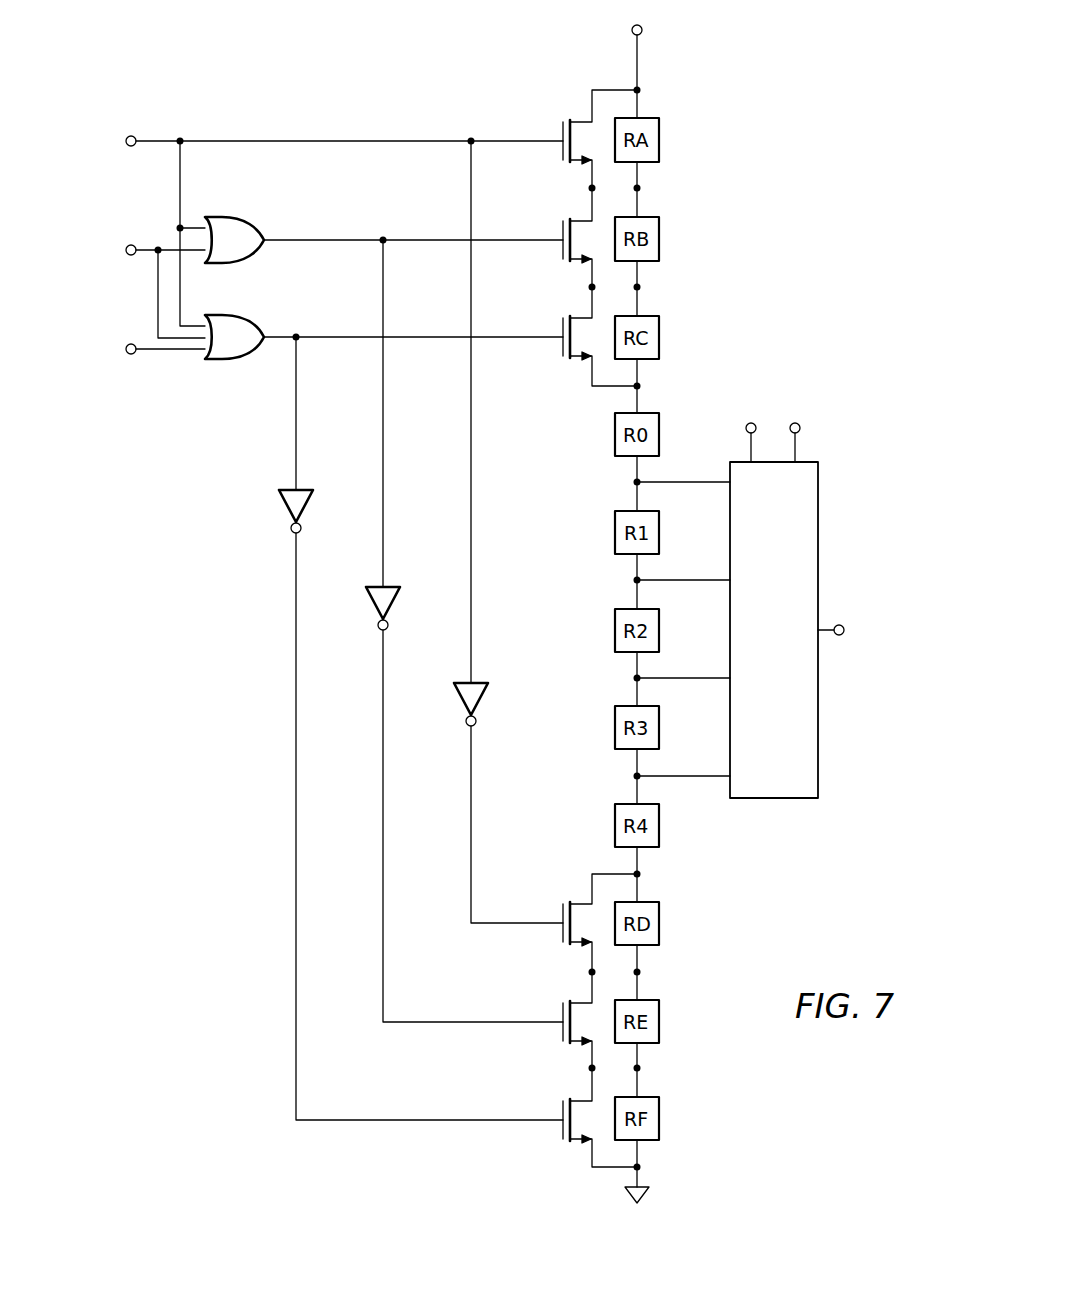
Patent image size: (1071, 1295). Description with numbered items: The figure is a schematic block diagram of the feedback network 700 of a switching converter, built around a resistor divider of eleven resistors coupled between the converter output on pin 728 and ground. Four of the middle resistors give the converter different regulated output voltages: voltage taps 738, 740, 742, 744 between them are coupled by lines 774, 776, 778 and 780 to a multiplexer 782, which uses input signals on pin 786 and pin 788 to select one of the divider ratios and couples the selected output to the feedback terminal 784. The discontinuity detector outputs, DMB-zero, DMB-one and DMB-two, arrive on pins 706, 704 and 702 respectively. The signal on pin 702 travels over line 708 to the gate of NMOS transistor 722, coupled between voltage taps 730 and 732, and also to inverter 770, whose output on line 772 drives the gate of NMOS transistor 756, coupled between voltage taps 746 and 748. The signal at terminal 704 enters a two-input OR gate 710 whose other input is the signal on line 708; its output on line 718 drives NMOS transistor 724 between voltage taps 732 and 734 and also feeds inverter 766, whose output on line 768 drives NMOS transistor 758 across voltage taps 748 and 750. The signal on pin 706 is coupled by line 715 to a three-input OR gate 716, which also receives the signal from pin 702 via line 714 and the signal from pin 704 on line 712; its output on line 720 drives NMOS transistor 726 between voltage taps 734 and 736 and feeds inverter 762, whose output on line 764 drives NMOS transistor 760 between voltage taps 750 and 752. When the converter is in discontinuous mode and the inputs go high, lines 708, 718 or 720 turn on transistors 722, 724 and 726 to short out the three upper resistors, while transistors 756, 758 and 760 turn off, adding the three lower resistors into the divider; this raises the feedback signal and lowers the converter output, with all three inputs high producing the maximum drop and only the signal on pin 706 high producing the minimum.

The feedback network 700 is at (269, 53).
The pin 702 is at (131, 136).
The pin 704 is at (131, 245).
The pin 706 is at (131, 355).
The line 708 is at (352, 138).
The 2-input OR gate 710 is at (245, 216).
The line 712 is at (154, 292).
The line 714 is at (186, 278).
The line 715 is at (185, 355).
The 3-input OR gate 716 is at (243, 362).
The line 718 is at (427, 236).
The line 720 is at (350, 342).
The NMOS transistor 722 is at (561, 131).
The NMOS transistor 724 is at (561, 230).
The NMOS transistor 726 is at (561, 327).
The pin 728 is at (649, 36).
The voltage tap 730 is at (630, 88).
The voltage tap 732 is at (642, 188).
The voltage tap 734 is at (642, 287).
The voltage tap 736 is at (642, 386).
The voltage tap 738 is at (632, 483).
The voltage tap 740 is at (632, 581).
The voltage tap 742 is at (632, 678).
The voltage tap 744 is at (632, 776).
The voltage tap 746 is at (642, 874).
The voltage tap 748 is at (642, 972).
The voltage tap 750 is at (642, 1068).
The voltage tap 752 is at (642, 1167).
The NMOS transistor 756 is at (561, 938).
The NMOS transistor 758 is at (561, 1036).
The NMOS transistor 760 is at (561, 1133).
The inverter 762 is at (289, 506).
The line 764 is at (294, 904).
The inverter 766 is at (374, 604).
The line 768 is at (379, 865).
The inverter 770 is at (462, 701).
The line 772 is at (469, 820).
The line 774 is at (690, 485).
The line 776 is at (690, 583).
The line 778 is at (690, 681).
The line 780 is at (690, 779).
The multiplexer 782 is at (795, 676).
The feedback terminal 784 is at (841, 636).
The pin 786 is at (746, 427).
The pin 788 is at (802, 425).